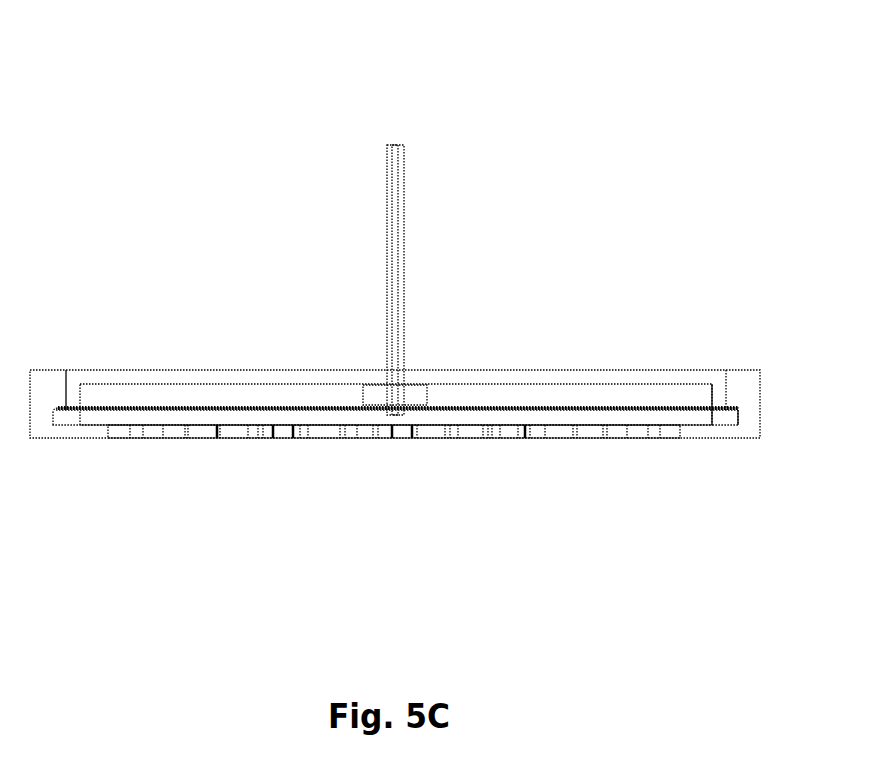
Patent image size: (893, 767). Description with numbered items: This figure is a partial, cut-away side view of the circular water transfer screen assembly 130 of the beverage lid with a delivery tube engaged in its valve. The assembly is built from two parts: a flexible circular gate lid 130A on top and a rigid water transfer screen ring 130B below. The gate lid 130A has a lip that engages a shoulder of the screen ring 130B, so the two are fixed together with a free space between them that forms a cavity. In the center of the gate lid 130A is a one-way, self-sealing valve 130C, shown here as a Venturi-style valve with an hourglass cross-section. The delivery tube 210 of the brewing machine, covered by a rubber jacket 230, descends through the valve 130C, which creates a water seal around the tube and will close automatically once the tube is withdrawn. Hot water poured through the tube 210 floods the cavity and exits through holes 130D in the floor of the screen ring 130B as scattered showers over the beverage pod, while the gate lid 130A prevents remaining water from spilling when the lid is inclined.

The circular water transfer screen assembly 130 is at (162, 462).
The circular gate lid 130A is at (187, 360).
The water transfer screen ring 130B is at (698, 437).
The one-way, self-sealing valve 130C is at (408, 397).
The holes 130D is at (212, 438).
The delivery tube 210 is at (395, 168).
The rubber jacket 230 is at (413, 208).